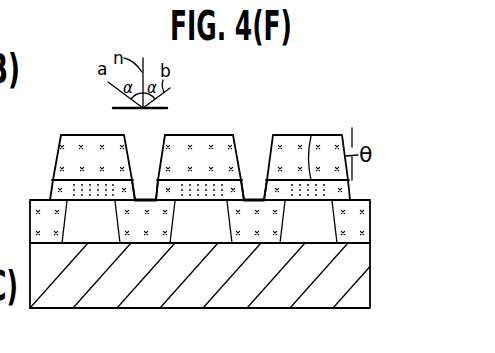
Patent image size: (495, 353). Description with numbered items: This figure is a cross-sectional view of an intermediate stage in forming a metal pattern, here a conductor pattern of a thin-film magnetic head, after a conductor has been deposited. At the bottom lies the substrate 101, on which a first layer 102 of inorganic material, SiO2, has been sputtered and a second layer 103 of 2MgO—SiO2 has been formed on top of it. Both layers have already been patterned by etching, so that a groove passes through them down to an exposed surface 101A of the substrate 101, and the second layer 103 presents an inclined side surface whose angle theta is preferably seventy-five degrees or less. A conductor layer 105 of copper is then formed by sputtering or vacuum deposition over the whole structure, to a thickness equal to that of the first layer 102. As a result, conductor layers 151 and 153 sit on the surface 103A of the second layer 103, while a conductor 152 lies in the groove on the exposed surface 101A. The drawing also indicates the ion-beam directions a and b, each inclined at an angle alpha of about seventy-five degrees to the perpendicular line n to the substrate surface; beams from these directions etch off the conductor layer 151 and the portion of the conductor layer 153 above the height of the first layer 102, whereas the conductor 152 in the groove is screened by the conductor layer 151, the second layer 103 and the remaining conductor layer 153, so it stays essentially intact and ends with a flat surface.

The substrate 101 is at (175, 300).
The exposed surface of the substrate 101A is at (264, 243).
The first layer of inorganic material 102 is at (329, 228).
The second layer of inorganic material 103 is at (76, 190).
The surface of the second layer 103A is at (311, 134).
The conductor layer 105 is at (58, 154).
The conductor layer 151 is at (201, 130).
The conductor 152 is at (143, 195).
The conductor layer 153 is at (270, 198).